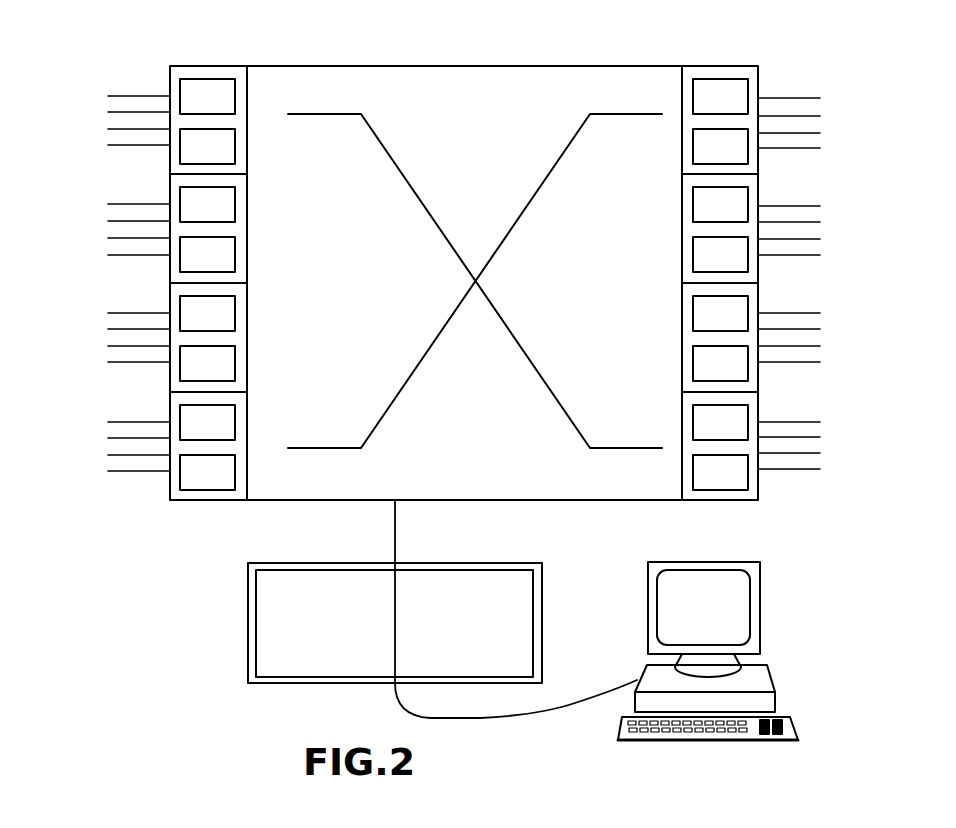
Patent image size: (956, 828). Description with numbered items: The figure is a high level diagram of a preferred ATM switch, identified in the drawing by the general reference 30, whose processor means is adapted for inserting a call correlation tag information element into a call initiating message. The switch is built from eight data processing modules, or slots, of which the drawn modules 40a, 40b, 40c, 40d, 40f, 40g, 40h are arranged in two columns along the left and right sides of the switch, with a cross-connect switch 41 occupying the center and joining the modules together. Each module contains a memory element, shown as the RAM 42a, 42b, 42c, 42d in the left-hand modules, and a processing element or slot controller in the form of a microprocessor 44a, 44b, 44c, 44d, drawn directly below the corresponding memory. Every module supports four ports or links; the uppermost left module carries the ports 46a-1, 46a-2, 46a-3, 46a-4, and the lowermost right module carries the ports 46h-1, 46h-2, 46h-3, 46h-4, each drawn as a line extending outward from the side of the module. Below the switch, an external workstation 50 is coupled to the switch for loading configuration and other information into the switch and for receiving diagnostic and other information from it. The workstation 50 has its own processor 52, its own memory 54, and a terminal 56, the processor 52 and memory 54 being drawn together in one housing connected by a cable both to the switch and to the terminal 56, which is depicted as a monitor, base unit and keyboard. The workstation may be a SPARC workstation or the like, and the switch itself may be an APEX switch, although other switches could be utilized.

The switching system 30 is at (778, 521).
The data processing module 40a is at (178, 66).
The data processing module 40b is at (240, 188).
The data processing module 40c is at (240, 383).
The data processing module 40d is at (175, 490).
The data processing module 40f is at (748, 191).
The data processing module 40g is at (746, 299).
The data processing module 40h is at (746, 406).
The cross-connect switch 41 is at (376, 502).
The RAM 42a is at (208, 80).
The RAM 42b is at (178, 196).
The RAM 42c is at (178, 304).
The RAM 42d is at (178, 411).
The microprocessor 44a is at (178, 150).
The microprocessor 44b is at (178, 258).
The microprocessor 44c is at (178, 366).
The microprocessor 44d is at (178, 473).
The port 46a-1 is at (132, 97).
The port 46a-2 is at (132, 112).
The port 46a-3 is at (132, 129).
The port 46a-4 is at (132, 145).
The port 46h-1 is at (800, 420).
The port 46h-2 is at (800, 437).
The port 46h-3 is at (800, 453).
The port 46h-4 is at (800, 469).
The external workstation 50 is at (588, 746).
The processor 52 is at (283, 678).
The memory 54 is at (508, 572).
The terminal 56 is at (761, 620).